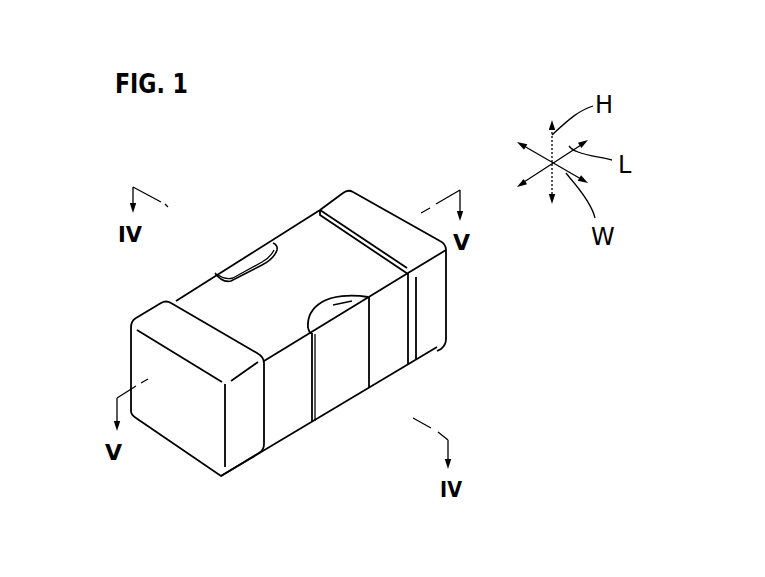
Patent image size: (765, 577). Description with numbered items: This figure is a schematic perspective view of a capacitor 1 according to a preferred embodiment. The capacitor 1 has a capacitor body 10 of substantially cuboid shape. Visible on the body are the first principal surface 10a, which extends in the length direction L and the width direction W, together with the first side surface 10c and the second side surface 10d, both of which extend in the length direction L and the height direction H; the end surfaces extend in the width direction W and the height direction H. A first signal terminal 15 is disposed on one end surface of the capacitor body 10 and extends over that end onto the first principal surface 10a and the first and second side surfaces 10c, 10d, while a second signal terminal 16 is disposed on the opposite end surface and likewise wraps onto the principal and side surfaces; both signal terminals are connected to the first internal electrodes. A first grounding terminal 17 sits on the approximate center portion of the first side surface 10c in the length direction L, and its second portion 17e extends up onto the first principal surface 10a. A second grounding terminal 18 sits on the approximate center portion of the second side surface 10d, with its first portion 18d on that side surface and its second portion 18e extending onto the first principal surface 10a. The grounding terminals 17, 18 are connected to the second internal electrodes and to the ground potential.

The capacitor 1 is at (378, 162).
The capacitor body 10 is at (391, 377).
The first principal surface 10a is at (298, 250).
The first side surface 10c is at (201, 290).
The second side surface 10d is at (288, 420).
The first signal terminal 15 is at (192, 460).
The second signal terminal 16 is at (455, 333).
The first grounding terminal 17 is at (237, 248).
The second portion of first grounding terminal 17e is at (257, 257).
The second grounding terminal 18 is at (351, 416).
The first portion of second grounding terminal 18d is at (346, 344).
The second portion of second grounding terminal 18e is at (362, 296).